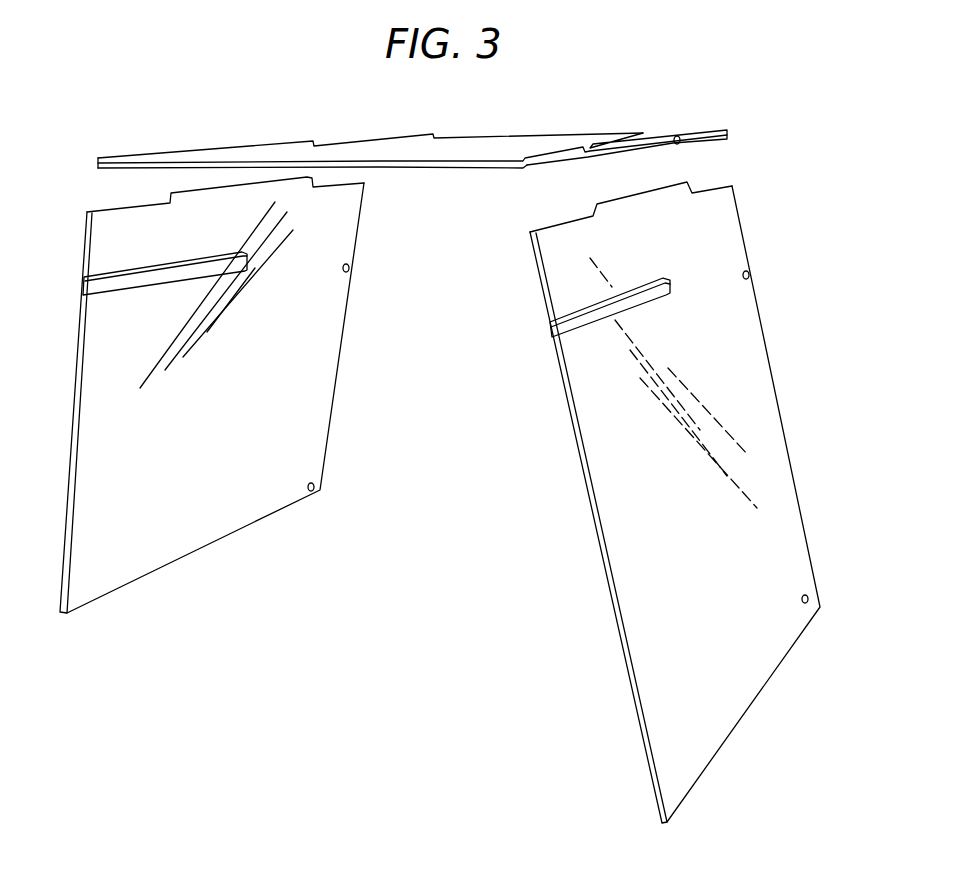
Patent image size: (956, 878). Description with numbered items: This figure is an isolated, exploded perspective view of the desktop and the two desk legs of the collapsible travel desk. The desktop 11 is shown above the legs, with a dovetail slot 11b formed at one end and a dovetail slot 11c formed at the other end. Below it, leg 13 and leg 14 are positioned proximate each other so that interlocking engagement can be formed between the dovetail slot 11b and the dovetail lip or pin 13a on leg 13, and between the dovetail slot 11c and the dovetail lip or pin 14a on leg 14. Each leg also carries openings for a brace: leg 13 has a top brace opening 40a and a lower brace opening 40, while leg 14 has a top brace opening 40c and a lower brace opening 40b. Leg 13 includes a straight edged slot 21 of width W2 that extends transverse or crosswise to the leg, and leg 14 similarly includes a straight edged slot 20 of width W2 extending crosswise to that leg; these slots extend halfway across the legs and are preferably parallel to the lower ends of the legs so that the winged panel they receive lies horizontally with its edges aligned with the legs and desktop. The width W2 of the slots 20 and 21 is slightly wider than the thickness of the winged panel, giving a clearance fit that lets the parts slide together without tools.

The desktop 11 is at (523, 140).
The dovetail slot 11b is at (644, 132).
The dovetail slot 11c is at (247, 145).
The leg 13 is at (783, 437).
The dovetail lip or pin 13a is at (660, 190).
The leg 14 is at (90, 450).
The dovetail lip or pin 14a is at (170, 195).
The straight edged slot 20 is at (120, 288).
The straight edged slot 21 is at (583, 323).
The lower brace opening 40 is at (315, 493).
The top brace opening 40a is at (352, 268).
The lower brace opening 40b is at (806, 606).
The top brace opening 40c is at (752, 274).
The slot width W2 is at (177, 304).